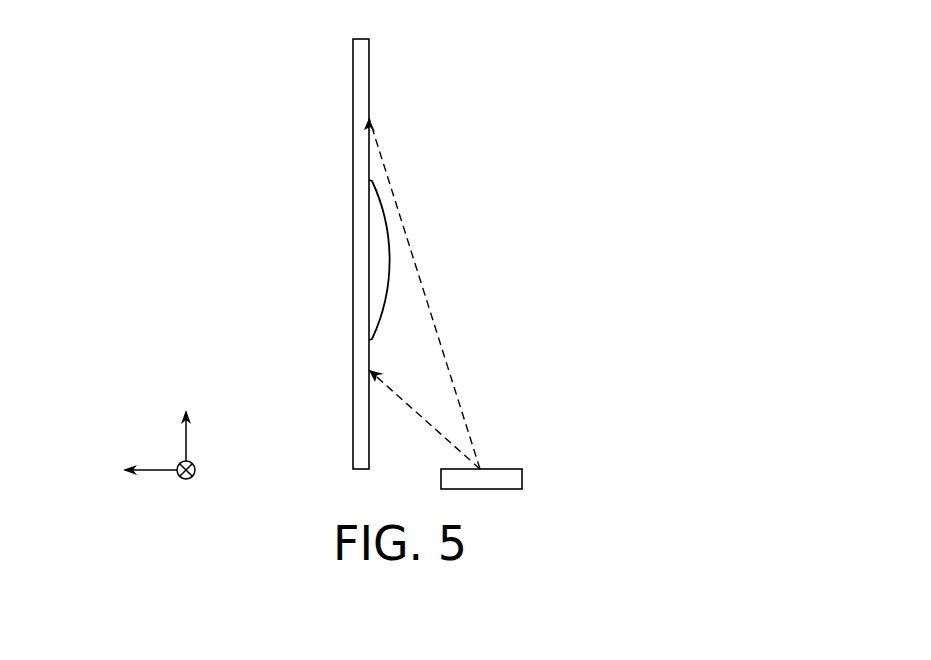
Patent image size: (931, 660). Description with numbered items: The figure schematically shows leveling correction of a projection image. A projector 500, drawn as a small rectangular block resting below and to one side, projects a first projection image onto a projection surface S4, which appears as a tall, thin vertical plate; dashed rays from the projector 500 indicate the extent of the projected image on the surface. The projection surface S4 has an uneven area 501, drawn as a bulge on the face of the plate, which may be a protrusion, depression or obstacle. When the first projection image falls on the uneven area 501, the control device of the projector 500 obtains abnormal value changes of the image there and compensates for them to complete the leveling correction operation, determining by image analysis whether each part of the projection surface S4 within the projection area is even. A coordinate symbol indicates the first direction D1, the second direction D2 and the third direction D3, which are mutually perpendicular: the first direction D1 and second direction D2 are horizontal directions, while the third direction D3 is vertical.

The projection surface S4 is at (370, 70).
The uneven area 501 is at (377, 291).
The projector 500 is at (522, 478).
The first direction D1 is at (199, 486).
The second direction D2 is at (132, 472).
The third direction D3 is at (185, 420).